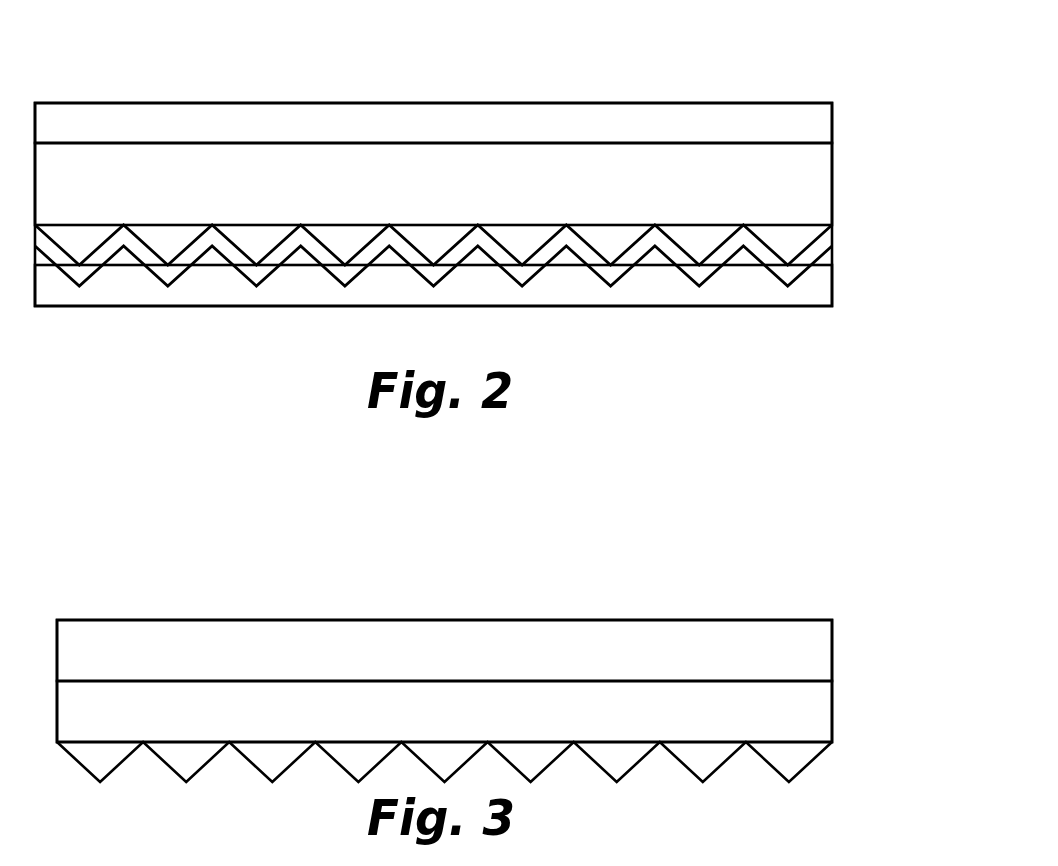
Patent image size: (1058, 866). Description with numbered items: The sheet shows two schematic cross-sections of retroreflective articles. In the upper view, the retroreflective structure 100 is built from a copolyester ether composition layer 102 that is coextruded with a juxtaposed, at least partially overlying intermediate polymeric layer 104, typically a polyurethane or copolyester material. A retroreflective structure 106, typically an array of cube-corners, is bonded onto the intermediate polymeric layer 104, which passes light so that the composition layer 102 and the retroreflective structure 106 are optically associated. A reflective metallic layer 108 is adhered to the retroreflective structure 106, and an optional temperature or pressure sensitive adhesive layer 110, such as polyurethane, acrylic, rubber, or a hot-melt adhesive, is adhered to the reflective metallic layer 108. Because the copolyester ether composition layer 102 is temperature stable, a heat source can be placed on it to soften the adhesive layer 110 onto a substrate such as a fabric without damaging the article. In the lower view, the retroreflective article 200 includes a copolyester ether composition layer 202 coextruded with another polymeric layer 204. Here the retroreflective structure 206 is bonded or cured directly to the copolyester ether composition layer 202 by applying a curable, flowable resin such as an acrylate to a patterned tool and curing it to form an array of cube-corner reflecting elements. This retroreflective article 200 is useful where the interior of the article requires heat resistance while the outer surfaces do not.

In FIG. 2, the retroreflective structure 100 is at (757, 84).
In FIG. 2, the copolyester ether composition layer 102 is at (228, 117).
In FIG. 2, the intermediate polymeric layer 104 is at (352, 167).
In FIG. 2, the retroreflective structure 106 is at (788, 232).
In FIG. 2, the reflective metallic layer 108 is at (807, 260).
In FIG. 2, the adhesive layer 110 is at (388, 290).
In FIG. 3, the retroreflective article 200 is at (757, 606).
In FIG. 3, the copolyester ether composition layer 202 is at (820, 708).
In FIG. 3, the polymeric layer 204 is at (647, 640).
In FIG. 3, the retroreflective structure 206 is at (795, 760).